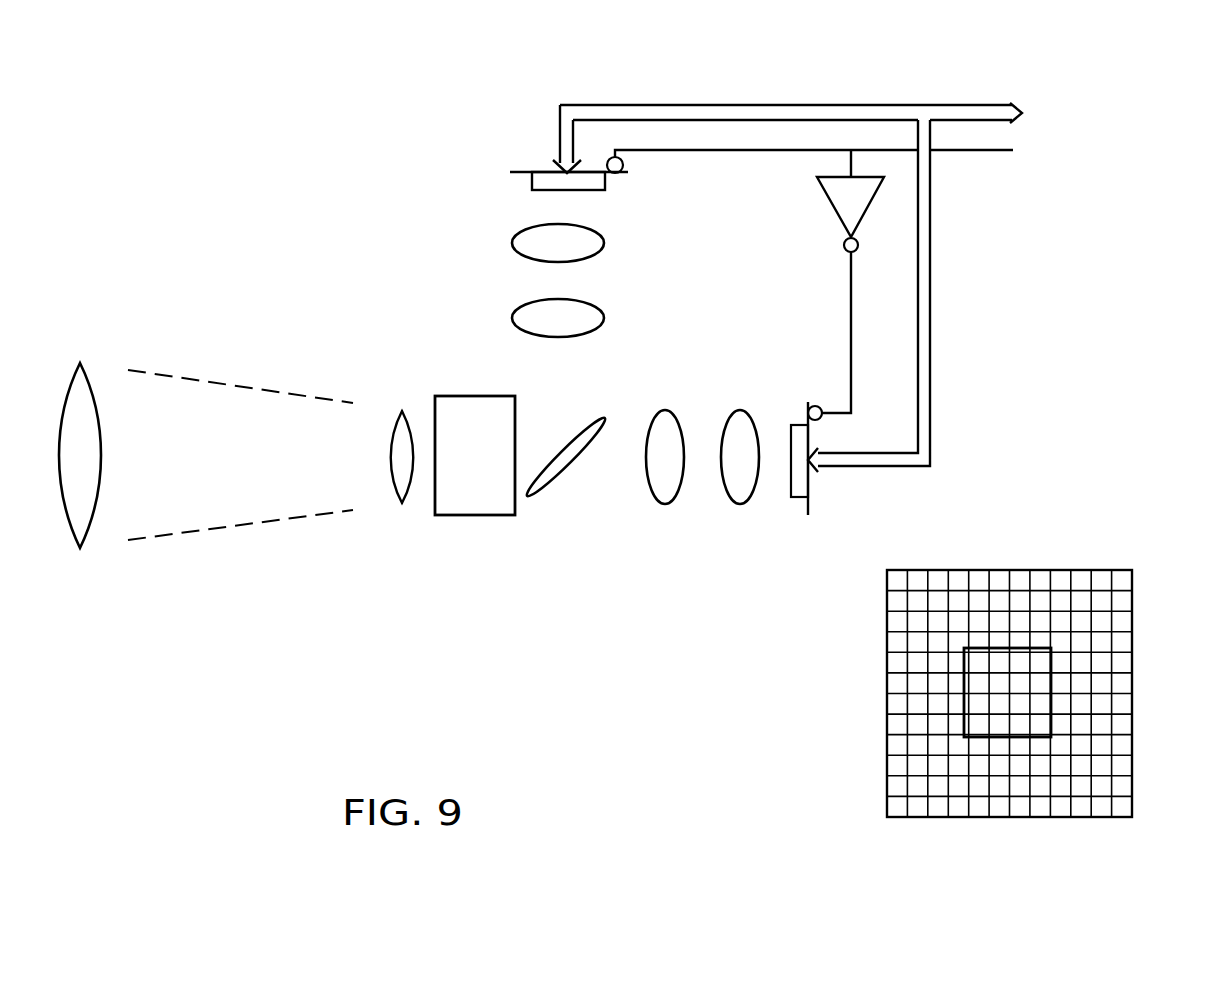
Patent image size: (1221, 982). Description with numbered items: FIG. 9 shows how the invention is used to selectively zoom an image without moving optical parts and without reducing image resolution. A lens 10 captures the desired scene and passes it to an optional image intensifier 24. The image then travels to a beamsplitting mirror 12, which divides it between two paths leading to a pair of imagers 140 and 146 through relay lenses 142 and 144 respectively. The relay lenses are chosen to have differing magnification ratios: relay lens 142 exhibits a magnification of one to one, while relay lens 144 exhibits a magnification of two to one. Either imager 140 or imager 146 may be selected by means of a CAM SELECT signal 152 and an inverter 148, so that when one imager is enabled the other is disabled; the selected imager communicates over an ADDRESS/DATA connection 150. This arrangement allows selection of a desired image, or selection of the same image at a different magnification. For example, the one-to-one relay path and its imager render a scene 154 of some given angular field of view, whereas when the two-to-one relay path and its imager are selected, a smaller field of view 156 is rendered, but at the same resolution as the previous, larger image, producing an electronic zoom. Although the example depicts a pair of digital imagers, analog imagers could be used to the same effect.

The lens 10 is at (413, 357).
The image intensifier 24 is at (453, 515).
The beamsplitting mirror 12 is at (603, 420).
The relay lens 144 is at (753, 510).
The imager 146 is at (810, 500).
The relay lens 142 is at (502, 332).
The imager 140 is at (536, 172).
The address/data bus 150 is at (900, 105).
The CAM SELECT signal 152 is at (776, 152).
The inverter 148 is at (833, 203).
The scene 154 is at (998, 570).
The smaller field of view 156 is at (964, 737).